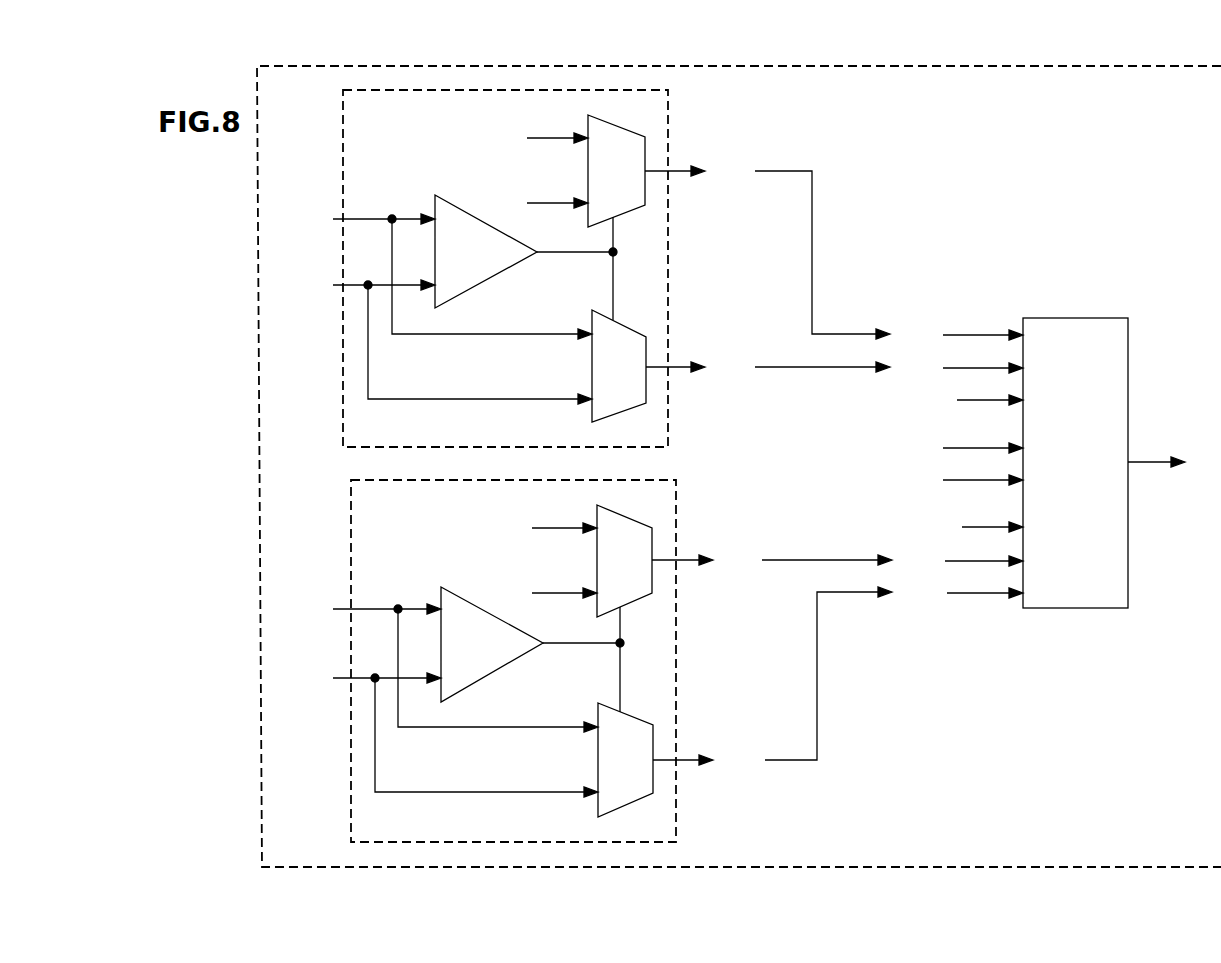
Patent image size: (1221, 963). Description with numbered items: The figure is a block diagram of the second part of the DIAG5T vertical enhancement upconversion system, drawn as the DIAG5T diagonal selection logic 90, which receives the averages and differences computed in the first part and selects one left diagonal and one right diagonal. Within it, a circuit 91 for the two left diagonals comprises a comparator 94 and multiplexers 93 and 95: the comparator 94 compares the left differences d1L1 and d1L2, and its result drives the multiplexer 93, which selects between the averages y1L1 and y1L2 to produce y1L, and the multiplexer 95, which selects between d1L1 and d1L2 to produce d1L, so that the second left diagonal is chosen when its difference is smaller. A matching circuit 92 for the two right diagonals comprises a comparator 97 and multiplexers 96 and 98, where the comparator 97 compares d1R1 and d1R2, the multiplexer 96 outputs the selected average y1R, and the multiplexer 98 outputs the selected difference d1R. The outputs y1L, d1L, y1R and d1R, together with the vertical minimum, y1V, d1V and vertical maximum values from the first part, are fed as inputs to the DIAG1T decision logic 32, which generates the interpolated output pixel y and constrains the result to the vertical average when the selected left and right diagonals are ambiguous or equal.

The DIAG5T diagonal selection logic 90 is at (938, 61).
The circuit 91 is at (672, 119).
The circuit 92 is at (672, 509).
The multiplexer 93 is at (608, 122).
The comparator 94 is at (449, 197).
The multiplexer 95 is at (594, 310).
The multiplexer 96 is at (613, 510).
The comparator 97 is at (453, 588).
The multiplexer 98 is at (603, 703).
The DIAG1T decision logic 32 is at (1078, 318).